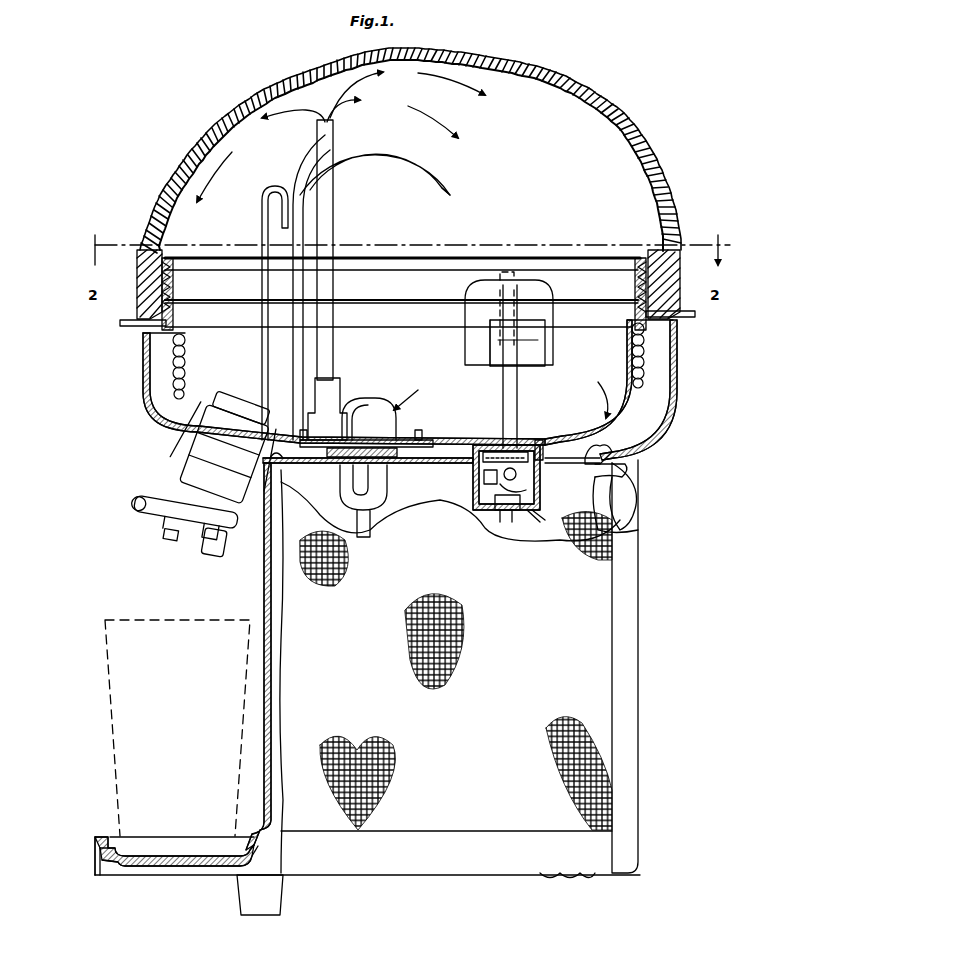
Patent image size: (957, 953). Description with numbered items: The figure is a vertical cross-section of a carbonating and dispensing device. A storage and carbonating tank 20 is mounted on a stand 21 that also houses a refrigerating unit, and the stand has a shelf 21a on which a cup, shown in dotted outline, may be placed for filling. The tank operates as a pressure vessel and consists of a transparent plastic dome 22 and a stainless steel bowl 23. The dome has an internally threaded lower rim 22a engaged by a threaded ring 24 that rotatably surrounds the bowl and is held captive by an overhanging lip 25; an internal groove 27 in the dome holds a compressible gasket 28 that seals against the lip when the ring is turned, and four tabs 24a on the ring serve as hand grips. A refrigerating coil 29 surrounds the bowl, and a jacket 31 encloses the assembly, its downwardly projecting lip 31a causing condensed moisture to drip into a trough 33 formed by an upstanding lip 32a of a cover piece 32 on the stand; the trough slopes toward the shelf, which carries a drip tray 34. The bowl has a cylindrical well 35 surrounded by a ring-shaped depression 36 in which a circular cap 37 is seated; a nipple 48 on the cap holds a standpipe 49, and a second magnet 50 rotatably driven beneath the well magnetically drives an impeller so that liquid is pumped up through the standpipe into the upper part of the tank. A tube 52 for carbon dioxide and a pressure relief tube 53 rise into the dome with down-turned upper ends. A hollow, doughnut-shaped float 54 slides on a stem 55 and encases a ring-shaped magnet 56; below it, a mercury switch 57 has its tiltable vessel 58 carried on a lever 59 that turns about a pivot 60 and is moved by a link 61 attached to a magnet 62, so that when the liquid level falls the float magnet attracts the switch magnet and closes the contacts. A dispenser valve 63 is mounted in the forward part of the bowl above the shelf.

The storage and carbonating tank 20 is at (597, 150).
The stand 21 is at (628, 665).
The shelf 21a is at (108, 836).
The dome 22 is at (652, 200).
The internally threaded lower rim 22a is at (680, 283).
The bowl 23 is at (636, 394).
The threaded ring 24 is at (640, 262).
The tabs 24a is at (132, 326).
The overhanging lip 25 is at (645, 258).
The internal groove 27 is at (680, 236).
The compressible gasket 28 is at (652, 245).
The refrigerating coil 29 is at (175, 362).
The jacket 31 is at (658, 426).
The downwardly projecting lip 31a is at (620, 452).
The cover piece 32 is at (640, 492).
The upstanding lip 32a is at (628, 470).
The trough 33 is at (637, 508).
The drip tray 34 is at (198, 850).
The cylindrical well 35 is at (385, 458).
The ring-shaped depression 36 is at (405, 455).
The circular cap 37 is at (375, 398).
The nipple 48 is at (338, 383).
The standpipe 49 is at (336, 284).
The second magnet 50 is at (342, 482).
The tube 52 is at (270, 200).
The pressure relief tube 53 is at (382, 132).
The float 54 is at (535, 300).
The stem 55 is at (517, 388).
The ring-shaped magnet 56 is at (530, 353).
The mercury switch 57 is at (538, 478).
The tiltable vessel 58 is at (508, 502).
The lever 59 is at (505, 480).
The pivot 60 is at (488, 478).
The link 61 is at (540, 445).
The magnet 62 is at (518, 448).
The dispenser valve 63 is at (186, 470).